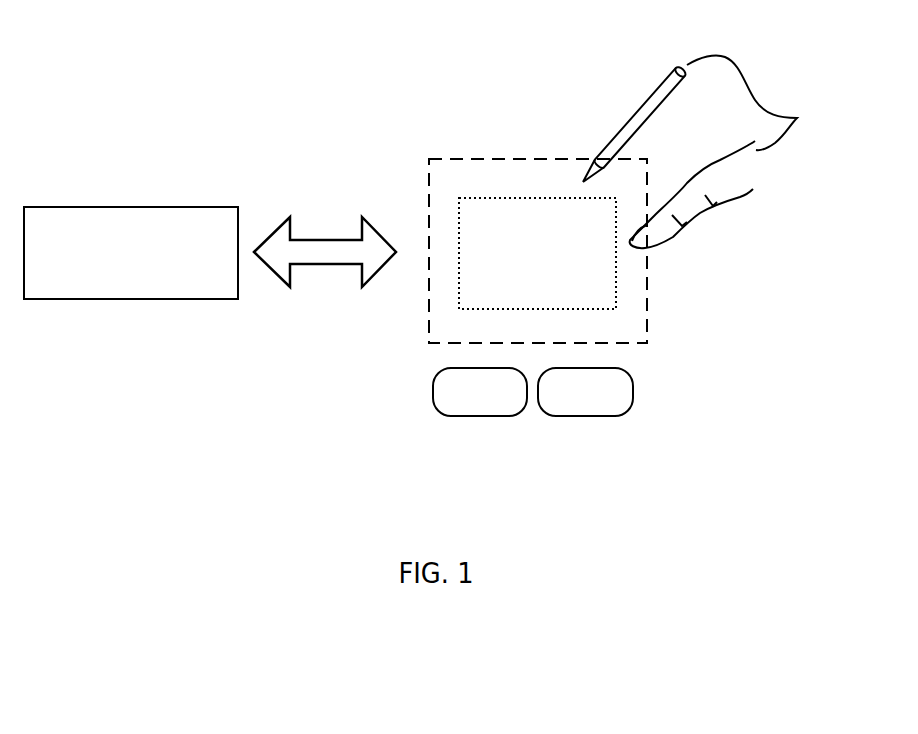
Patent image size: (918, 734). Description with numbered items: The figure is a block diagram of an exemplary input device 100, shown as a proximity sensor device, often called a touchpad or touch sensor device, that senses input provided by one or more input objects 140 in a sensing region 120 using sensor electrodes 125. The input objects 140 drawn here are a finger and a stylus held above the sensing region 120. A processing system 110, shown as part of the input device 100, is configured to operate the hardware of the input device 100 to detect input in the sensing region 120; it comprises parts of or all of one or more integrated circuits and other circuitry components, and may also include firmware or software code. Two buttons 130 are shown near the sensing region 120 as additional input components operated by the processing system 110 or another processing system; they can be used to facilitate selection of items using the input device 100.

The input device 100 is at (327, 70).
The processing system 110 is at (116, 278).
The sensing region 120 is at (647, 303).
The sensor electrodes 125 is at (517, 198).
The buttons 130 is at (475, 416).
The input objects 140 is at (708, 151).